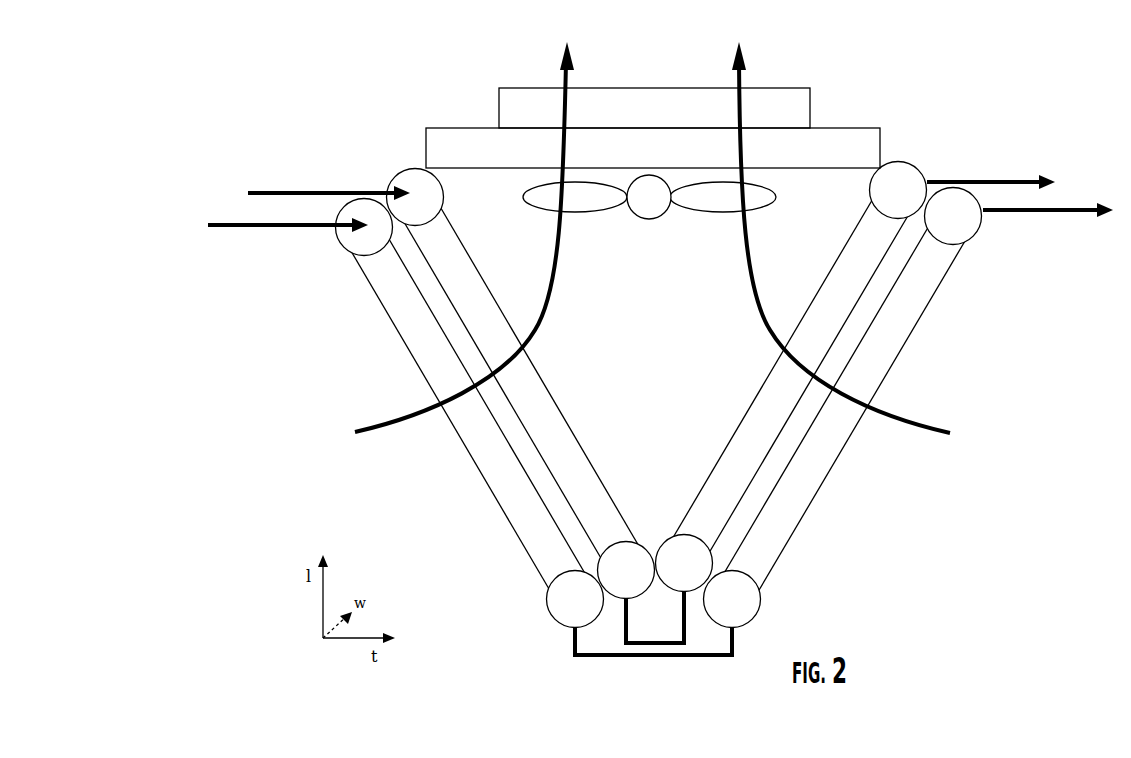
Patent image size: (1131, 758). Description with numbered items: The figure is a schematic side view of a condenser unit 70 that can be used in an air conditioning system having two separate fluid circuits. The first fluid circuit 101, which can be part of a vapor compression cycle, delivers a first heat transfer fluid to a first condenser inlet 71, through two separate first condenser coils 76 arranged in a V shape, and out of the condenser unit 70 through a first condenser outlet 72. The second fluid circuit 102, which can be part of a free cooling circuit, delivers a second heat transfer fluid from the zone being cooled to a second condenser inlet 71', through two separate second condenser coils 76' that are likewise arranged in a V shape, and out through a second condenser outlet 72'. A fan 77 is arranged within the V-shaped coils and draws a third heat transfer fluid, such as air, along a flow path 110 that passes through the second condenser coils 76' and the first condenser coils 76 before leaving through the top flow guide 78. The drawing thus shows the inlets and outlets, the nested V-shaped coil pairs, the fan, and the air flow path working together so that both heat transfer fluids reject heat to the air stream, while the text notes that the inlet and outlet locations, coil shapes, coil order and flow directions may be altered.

The condenser unit 70 is at (651, 337).
The first condenser inlet 71 is at (390, 177).
The second condenser inlet 71' is at (350, 252).
The first condenser outlet 72 is at (911, 164).
The second condenser outlet 72' is at (982, 223).
The first condenser coils 76 is at (654, 377).
The second condenser coils 76' is at (657, 412).
The fan 77 is at (655, 219).
The top flow guide 78 is at (783, 88).
The first fluid circuit 101 is at (267, 187).
The second fluid circuit 102 is at (223, 228).
The flow path 110 is at (380, 418).